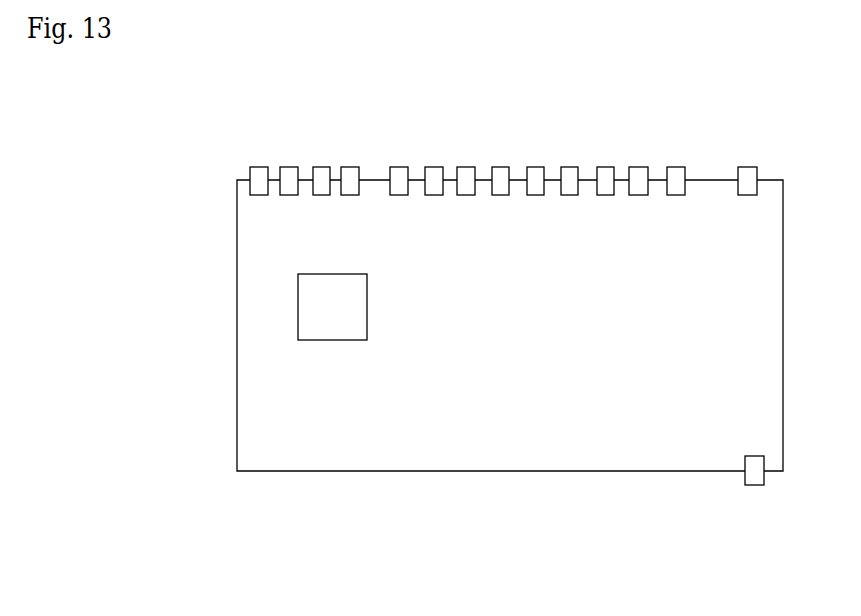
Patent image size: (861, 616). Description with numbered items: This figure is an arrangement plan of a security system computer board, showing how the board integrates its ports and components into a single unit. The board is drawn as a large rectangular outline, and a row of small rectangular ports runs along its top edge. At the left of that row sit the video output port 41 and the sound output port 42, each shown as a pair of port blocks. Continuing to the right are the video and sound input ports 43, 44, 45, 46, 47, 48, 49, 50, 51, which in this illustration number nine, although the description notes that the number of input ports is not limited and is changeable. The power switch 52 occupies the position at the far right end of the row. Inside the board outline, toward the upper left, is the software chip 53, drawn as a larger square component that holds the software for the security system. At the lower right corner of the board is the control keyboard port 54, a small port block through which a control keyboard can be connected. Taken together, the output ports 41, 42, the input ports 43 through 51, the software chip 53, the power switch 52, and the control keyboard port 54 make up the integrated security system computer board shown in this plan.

The video output port 41 is at (285, 177).
The sound output port 42 is at (347, 177).
The video and sound input port 43 is at (395, 175).
The video and sound input port 44 is at (433, 177).
The video and sound input port 45 is at (465, 177).
The video and sound input port 46 is at (498, 177).
The video and sound input port 47 is at (533, 177).
The video and sound input port 48 is at (568, 177).
The video and sound input port 49 is at (612, 165).
The video and sound input port 50 is at (640, 175).
The video and sound input port 51 is at (676, 175).
The power switch 52 is at (748, 175).
The software chip 53 is at (330, 307).
The control keyboard port 54 is at (755, 472).